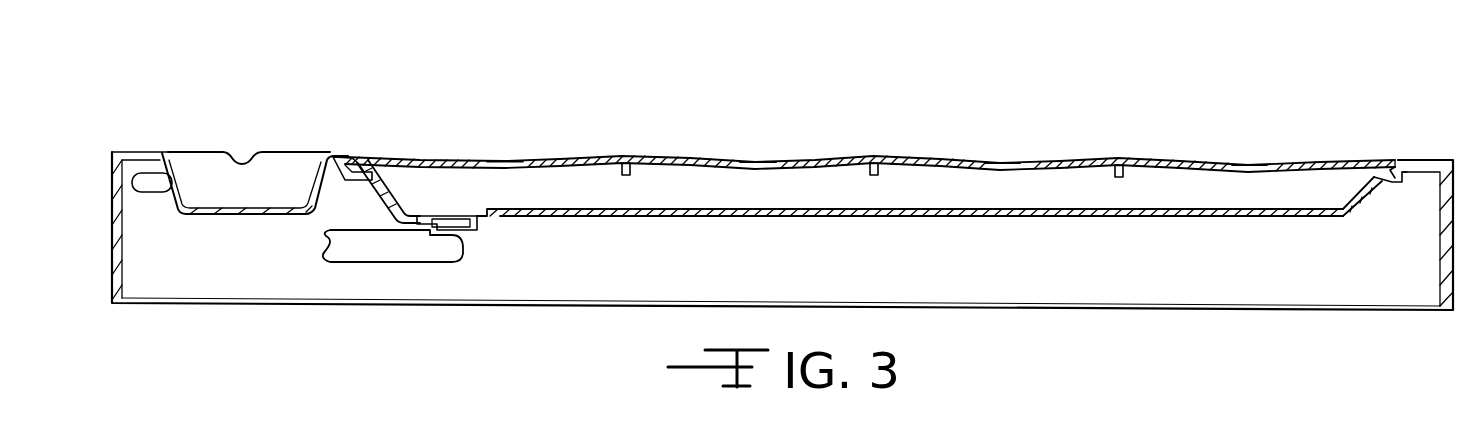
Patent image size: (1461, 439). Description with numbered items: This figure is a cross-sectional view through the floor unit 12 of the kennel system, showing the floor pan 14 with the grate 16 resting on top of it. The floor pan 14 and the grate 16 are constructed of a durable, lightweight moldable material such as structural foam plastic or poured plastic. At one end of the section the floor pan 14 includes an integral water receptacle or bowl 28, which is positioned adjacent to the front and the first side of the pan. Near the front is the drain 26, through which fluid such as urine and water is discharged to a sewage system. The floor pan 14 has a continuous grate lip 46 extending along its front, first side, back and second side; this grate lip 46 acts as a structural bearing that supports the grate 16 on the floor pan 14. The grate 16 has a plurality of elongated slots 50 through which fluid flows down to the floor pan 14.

The floor unit 12 is at (1290, 150).
The floor pan 14 is at (1455, 268).
The grate 16 is at (1341, 160).
The drain 26 is at (460, 227).
The water receptacle or bowl 28 is at (215, 207).
The grate lip 46 is at (375, 157).
The elongated slots 50 is at (502, 160).